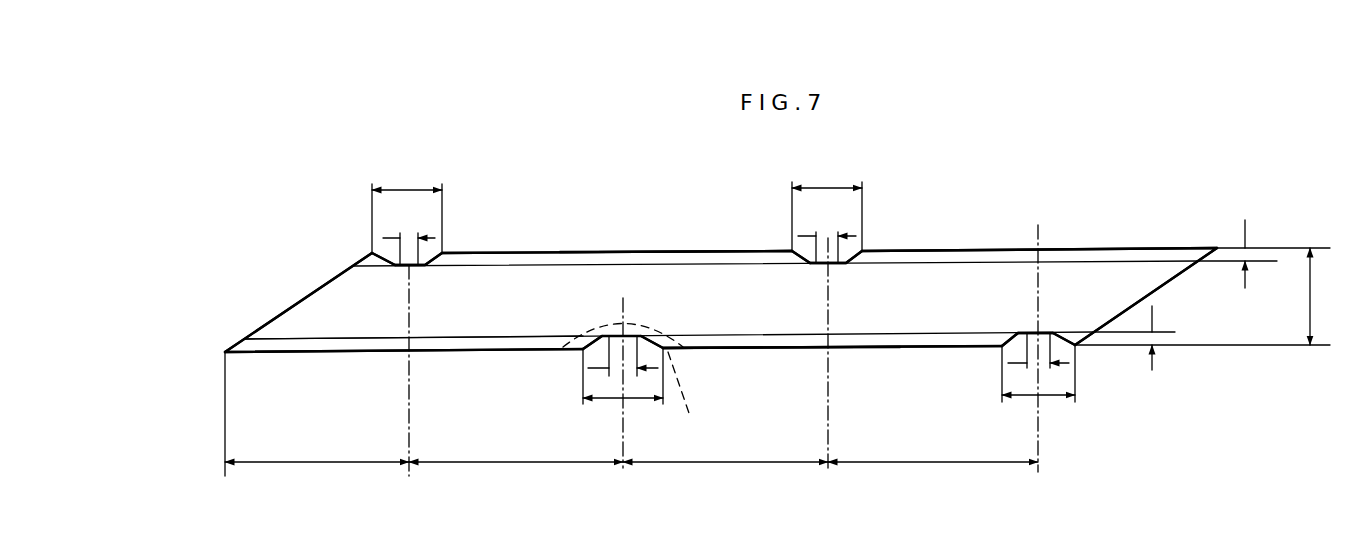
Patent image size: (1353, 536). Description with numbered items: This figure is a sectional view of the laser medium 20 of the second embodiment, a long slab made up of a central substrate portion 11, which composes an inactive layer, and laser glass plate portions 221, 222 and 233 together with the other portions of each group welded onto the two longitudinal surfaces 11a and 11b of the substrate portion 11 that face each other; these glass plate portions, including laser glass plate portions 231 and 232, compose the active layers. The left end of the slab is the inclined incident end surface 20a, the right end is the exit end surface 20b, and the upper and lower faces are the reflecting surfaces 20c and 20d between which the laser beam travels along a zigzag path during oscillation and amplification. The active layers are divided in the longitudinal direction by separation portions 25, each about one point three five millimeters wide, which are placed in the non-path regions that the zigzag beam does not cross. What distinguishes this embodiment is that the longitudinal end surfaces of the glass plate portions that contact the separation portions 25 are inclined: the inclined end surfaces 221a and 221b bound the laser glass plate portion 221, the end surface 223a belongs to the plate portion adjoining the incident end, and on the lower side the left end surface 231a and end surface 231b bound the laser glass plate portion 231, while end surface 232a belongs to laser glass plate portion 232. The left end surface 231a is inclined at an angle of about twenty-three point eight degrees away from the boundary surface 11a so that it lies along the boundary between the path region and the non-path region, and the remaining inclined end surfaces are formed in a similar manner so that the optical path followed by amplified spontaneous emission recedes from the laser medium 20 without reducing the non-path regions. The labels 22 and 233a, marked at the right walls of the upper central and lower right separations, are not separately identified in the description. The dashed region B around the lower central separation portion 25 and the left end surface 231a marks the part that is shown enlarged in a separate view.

The laser medium 20 is at (1190, 211).
The incident end surface 20a is at (284, 311).
The exit end surface 20b is at (1170, 284).
The reflecting surface 20c is at (564, 255).
The reflecting surface 20d is at (896, 338).
The substrate portion 11 is at (1078, 276).
The surface of the substrate portion 11a is at (656, 265).
The surface of the substrate portion 11b is at (851, 334).
The upper central notch 22 is at (856, 259).
The separation portion 25 is at (416, 261).
The laser glass plate portion 221 is at (622, 255).
The inclined end surface 221a is at (800, 259).
The inclined end surface 221b is at (440, 262).
The laser glass plate portion 222 is at (984, 255).
The inclined end surface 223a is at (378, 252).
The laser glass plate portion 231 is at (797, 340).
The left end surface 231a is at (659, 351).
The inclined end surface 231b is at (1009, 348).
The laser glass plate portion 232 is at (434, 344).
The inclined end surface 232a is at (587, 351).
The laser glass plate portion 233 is at (1064, 351).
The bottom of lower right notch 233a is at (1067, 352).
The part B is at (634, 385).